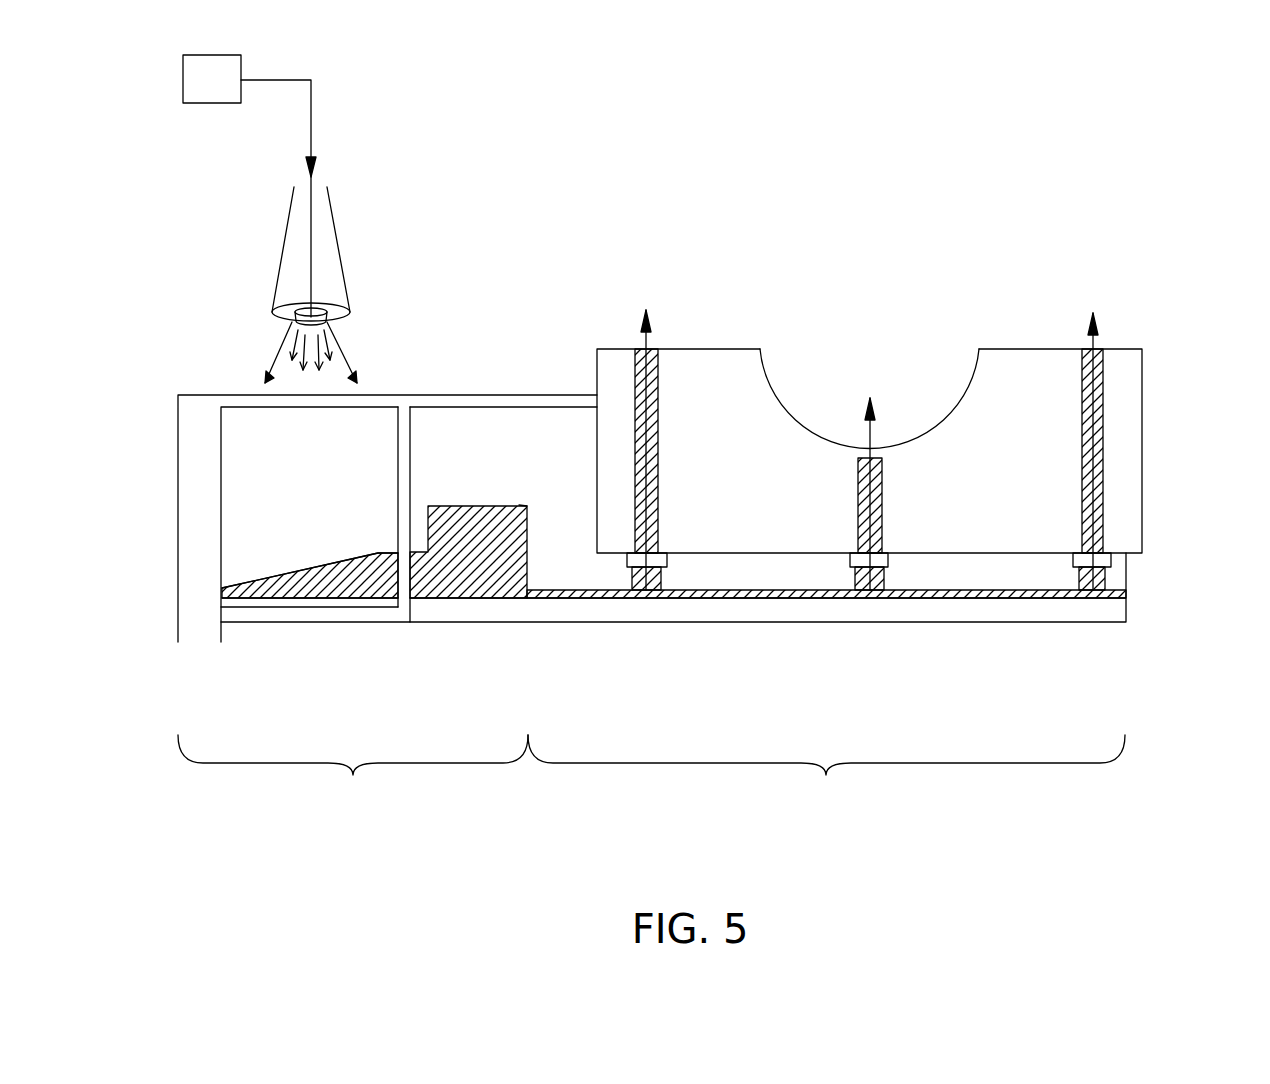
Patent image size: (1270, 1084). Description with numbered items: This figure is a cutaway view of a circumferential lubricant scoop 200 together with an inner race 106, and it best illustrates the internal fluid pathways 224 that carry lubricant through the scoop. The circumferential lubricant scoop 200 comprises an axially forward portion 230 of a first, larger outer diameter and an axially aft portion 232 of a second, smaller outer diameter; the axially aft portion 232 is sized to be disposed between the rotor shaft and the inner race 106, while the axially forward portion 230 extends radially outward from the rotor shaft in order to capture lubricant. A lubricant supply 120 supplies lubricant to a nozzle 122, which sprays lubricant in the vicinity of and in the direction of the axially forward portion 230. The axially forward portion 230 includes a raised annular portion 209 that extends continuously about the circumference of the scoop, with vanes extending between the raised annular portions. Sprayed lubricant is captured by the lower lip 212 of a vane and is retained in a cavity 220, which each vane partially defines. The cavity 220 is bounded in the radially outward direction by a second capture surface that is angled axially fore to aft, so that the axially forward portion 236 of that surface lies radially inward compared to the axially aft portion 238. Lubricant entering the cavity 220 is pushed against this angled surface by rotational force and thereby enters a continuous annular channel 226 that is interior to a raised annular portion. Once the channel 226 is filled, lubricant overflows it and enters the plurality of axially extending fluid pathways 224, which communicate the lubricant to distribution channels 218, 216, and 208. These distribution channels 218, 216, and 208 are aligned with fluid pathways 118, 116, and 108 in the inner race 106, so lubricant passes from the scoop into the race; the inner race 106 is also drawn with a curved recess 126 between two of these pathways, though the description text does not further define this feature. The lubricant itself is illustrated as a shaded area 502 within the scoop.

The lubricant supply 120 is at (249, 186).
The nozzle 122 is at (290, 273).
The raised annular portion 209 is at (193, 613).
The axially forward portion of second capture surface 236 is at (242, 583).
The axially aft portion of second capture surface 238 is at (378, 553).
The lower lip 212 is at (265, 623).
The cavity 220 is at (383, 587).
The continuous annular channel 226 is at (477, 506).
The lubricant 502 is at (519, 505).
The axially extending fluid pathways 224 is at (697, 600).
The circumferential lubricant scoop 200 is at (1070, 612).
The inner race 106 is at (1132, 373).
The curved recess 126 is at (972, 387).
The fluid pathway 118 is at (648, 408).
The distribution channel 218 is at (636, 577).
The fluid pathway 116 is at (882, 498).
The distribution channel 216 is at (873, 583).
The fluid pathway 108 is at (1102, 415).
The distribution channel 208 is at (1103, 575).
The axially forward portion 230 is at (353, 772).
The axially aft portion 232 is at (826, 772).